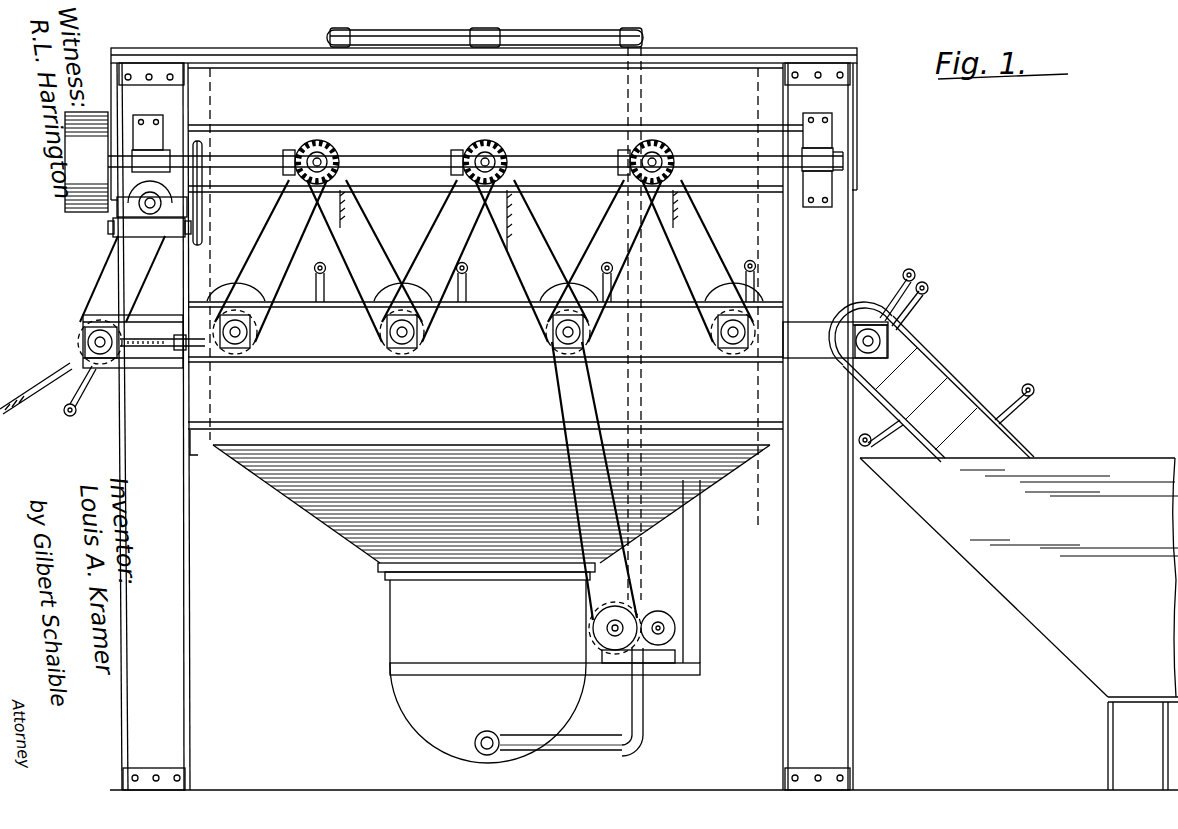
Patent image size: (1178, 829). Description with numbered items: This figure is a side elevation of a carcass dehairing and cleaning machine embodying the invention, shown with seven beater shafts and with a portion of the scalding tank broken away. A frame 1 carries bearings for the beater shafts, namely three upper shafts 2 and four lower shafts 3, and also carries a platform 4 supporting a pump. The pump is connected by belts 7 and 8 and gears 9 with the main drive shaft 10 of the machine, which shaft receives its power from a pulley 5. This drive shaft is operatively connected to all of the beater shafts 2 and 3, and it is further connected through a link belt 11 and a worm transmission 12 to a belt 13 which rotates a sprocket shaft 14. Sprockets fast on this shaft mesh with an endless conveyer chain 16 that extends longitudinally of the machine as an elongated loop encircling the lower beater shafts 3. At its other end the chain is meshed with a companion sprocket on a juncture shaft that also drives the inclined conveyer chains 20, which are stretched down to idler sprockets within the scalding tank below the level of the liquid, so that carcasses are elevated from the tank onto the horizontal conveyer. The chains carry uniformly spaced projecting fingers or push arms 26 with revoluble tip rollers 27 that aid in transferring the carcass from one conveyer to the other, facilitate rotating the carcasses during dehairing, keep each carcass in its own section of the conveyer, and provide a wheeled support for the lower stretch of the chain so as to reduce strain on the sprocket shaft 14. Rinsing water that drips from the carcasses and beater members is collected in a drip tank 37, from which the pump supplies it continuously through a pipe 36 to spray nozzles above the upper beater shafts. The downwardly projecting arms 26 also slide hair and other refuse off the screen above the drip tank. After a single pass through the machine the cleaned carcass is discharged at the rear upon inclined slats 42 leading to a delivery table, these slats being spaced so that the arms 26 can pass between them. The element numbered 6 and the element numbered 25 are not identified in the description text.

The frame 1 is at (830, 621).
The upper beater shafts 2 is at (668, 140).
The lower beater shafts 3 is at (730, 342).
The platform 4 is at (672, 652).
The pulley 5 is at (630, 612).
The pulley 6 is at (685, 618).
The belt 7 is at (596, 412).
The belt 8 is at (540, 248).
The gears 9 is at (462, 150).
The main drive shaft 10 is at (552, 150).
The link belt 11 is at (203, 200).
The worm transmission 12 is at (138, 210).
The belt 13 is at (97, 288).
The sprocket shaft 14 is at (92, 342).
The endless conveyer chain 16 is at (73, 156).
The inclined conveyer chains 20 is at (950, 373).
The pulley 25 is at (912, 305).
The arms 26 is at (466, 283).
The rollers 27 is at (916, 270).
The pipe 36 is at (485, 24).
The drip tank 37 is at (418, 637).
The inclined slats 42 is at (12, 406).